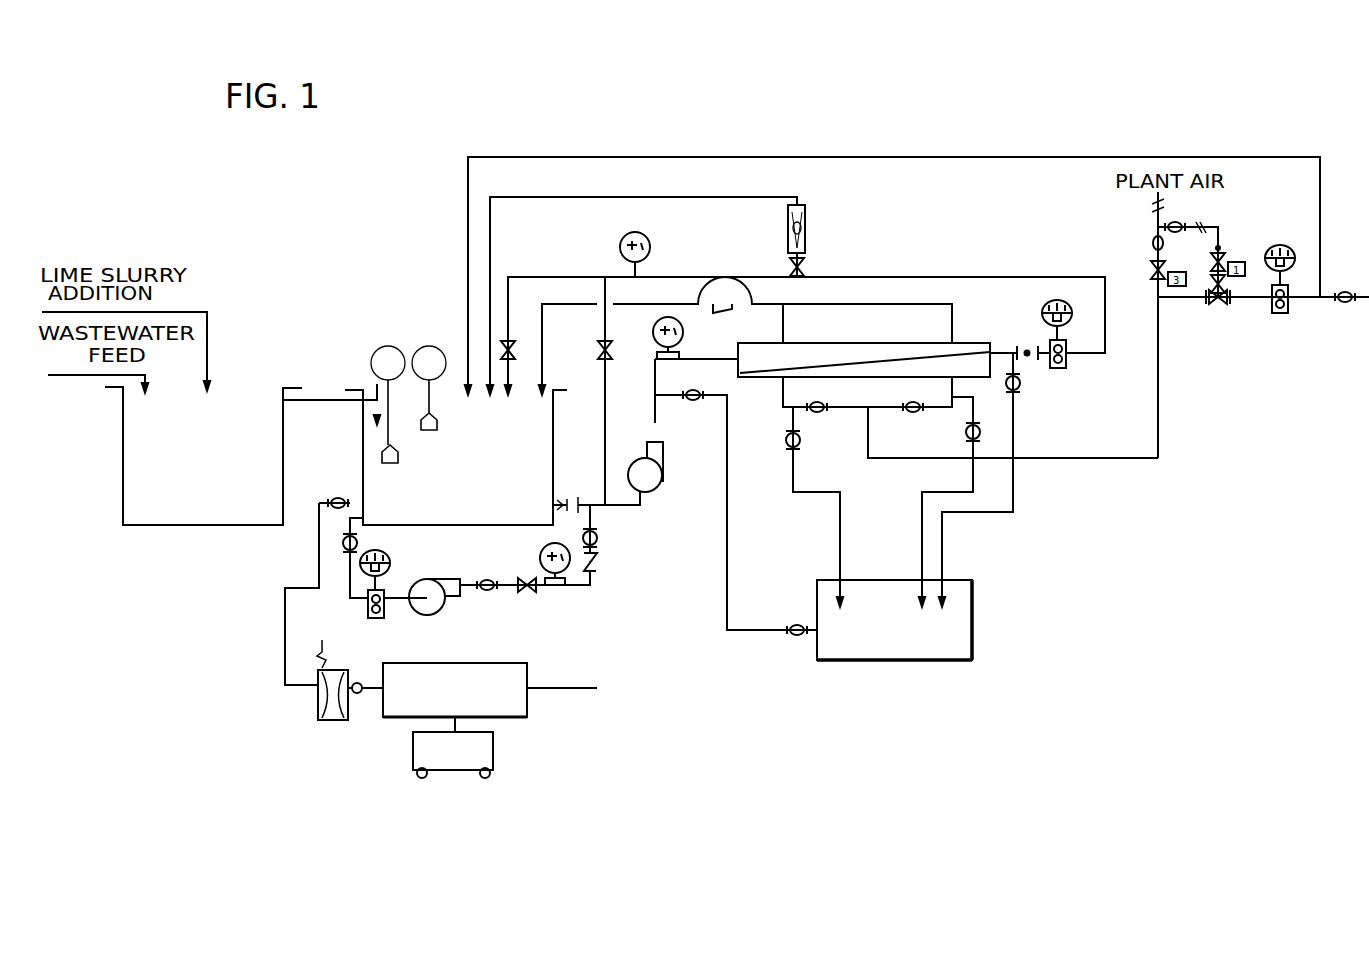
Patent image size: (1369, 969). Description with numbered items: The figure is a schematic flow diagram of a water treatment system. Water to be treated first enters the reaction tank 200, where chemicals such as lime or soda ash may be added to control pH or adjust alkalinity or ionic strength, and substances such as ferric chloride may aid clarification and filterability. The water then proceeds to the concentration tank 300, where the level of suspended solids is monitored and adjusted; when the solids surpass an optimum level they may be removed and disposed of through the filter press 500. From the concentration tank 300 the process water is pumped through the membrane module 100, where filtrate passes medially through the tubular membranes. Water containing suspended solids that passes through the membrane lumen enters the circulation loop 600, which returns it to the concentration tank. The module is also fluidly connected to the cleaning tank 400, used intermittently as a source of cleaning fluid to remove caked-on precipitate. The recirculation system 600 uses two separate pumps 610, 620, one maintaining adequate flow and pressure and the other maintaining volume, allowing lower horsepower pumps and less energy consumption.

The membrane module 100 is at (968, 343).
The reaction tank 200 is at (176, 526).
The concentration tank 300 is at (362, 427).
The cleaning tank 400 is at (972, 624).
The filter press 500 is at (528, 673).
The circulation loop 600 is at (1077, 277).
The pump 610 is at (663, 475).
The pump 620 is at (442, 611).